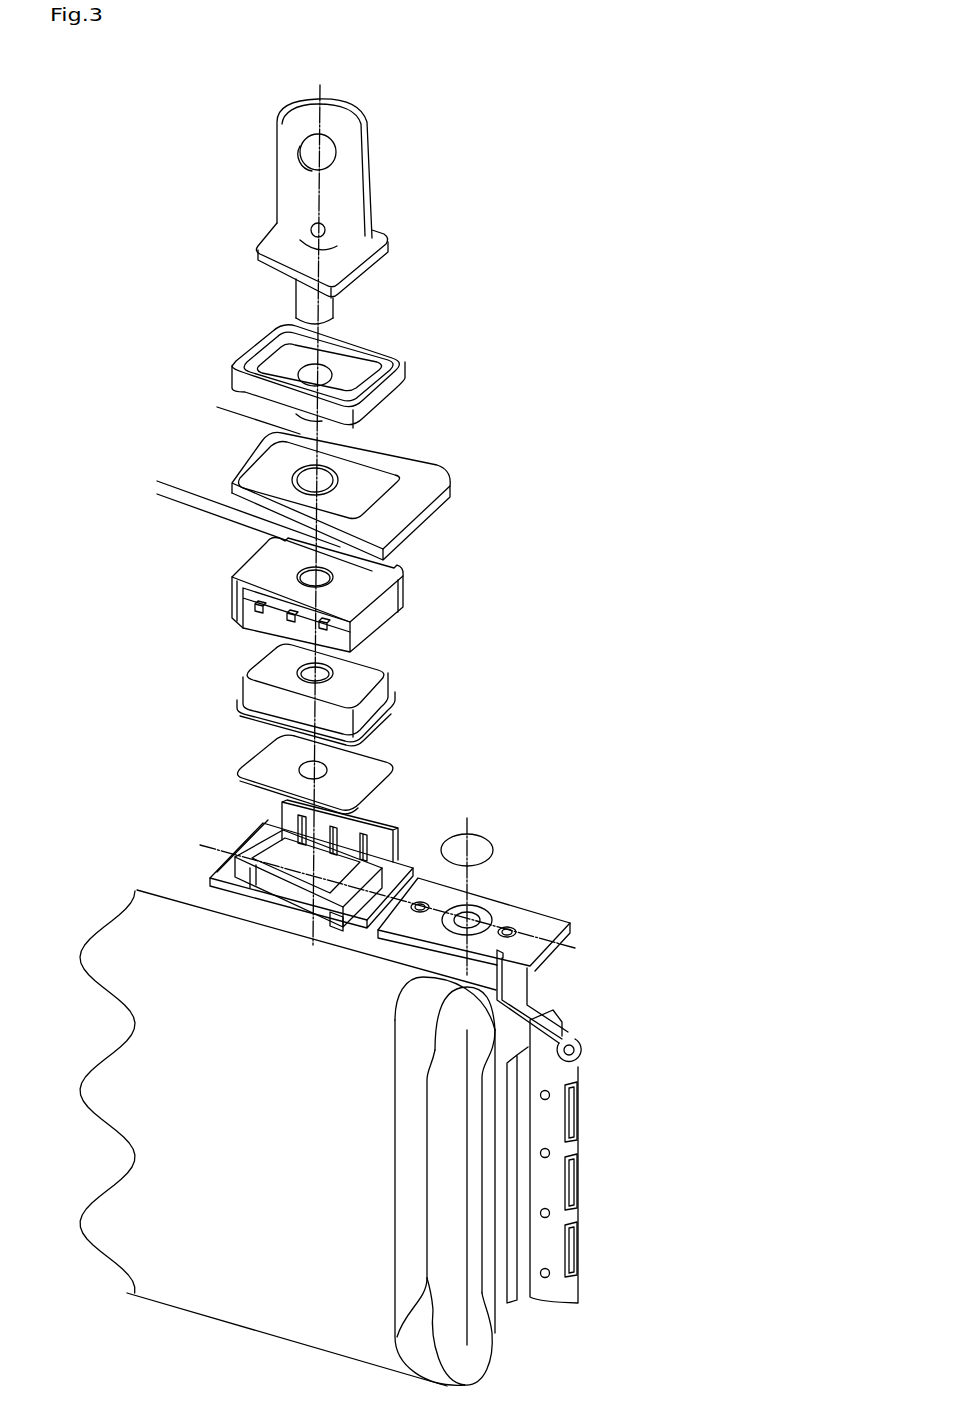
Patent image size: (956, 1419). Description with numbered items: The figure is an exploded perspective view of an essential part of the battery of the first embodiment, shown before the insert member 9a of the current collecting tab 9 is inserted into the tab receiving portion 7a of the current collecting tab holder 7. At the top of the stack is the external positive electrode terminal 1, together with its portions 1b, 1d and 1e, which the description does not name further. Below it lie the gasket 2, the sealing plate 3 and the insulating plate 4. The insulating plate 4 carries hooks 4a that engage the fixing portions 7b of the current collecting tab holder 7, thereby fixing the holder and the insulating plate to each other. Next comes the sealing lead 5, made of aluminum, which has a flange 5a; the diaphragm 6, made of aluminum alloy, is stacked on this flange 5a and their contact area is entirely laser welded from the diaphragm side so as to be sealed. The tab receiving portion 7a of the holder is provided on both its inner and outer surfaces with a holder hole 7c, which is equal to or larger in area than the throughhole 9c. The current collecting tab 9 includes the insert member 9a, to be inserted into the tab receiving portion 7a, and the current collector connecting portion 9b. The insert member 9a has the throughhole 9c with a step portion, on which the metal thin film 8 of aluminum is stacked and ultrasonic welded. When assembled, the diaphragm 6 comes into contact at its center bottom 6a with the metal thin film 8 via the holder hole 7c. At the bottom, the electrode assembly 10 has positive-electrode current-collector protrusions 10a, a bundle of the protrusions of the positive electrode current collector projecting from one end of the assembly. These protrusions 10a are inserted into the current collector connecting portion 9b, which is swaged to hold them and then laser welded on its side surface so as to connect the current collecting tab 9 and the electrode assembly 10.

The external positive electrode terminal 1 is at (396, 220).
The small hole of terminal 1b is at (312, 233).
The flange of terminal 1d is at (292, 282).
The shaft portion of terminal 1e is at (300, 309).
The gasket 2 is at (420, 378).
The sealing plate 3 is at (456, 510).
The insulating plate 4 is at (403, 611).
The hooks 4a is at (256, 611).
The sealing lead 5 is at (403, 700).
The flange 5a is at (235, 710).
The diaphragm 6 is at (411, 770).
The center bottom 6a is at (300, 776).
The current collecting tab holder 7 is at (397, 868).
The tab receiving portion 7a is at (341, 932).
The fixing portion 7b is at (302, 888).
The holder hole 7c is at (312, 870).
The metal thin film 8 is at (500, 846).
The current collecting tab 9 is at (527, 1089).
The insert member 9a is at (540, 928).
The current collector connecting portion 9b is at (580, 1070).
The throughhole 9c is at (452, 930).
The electrode assembly 10 is at (404, 1138).
The positive-electrode current-collector protrusions 10a is at (447, 1190).